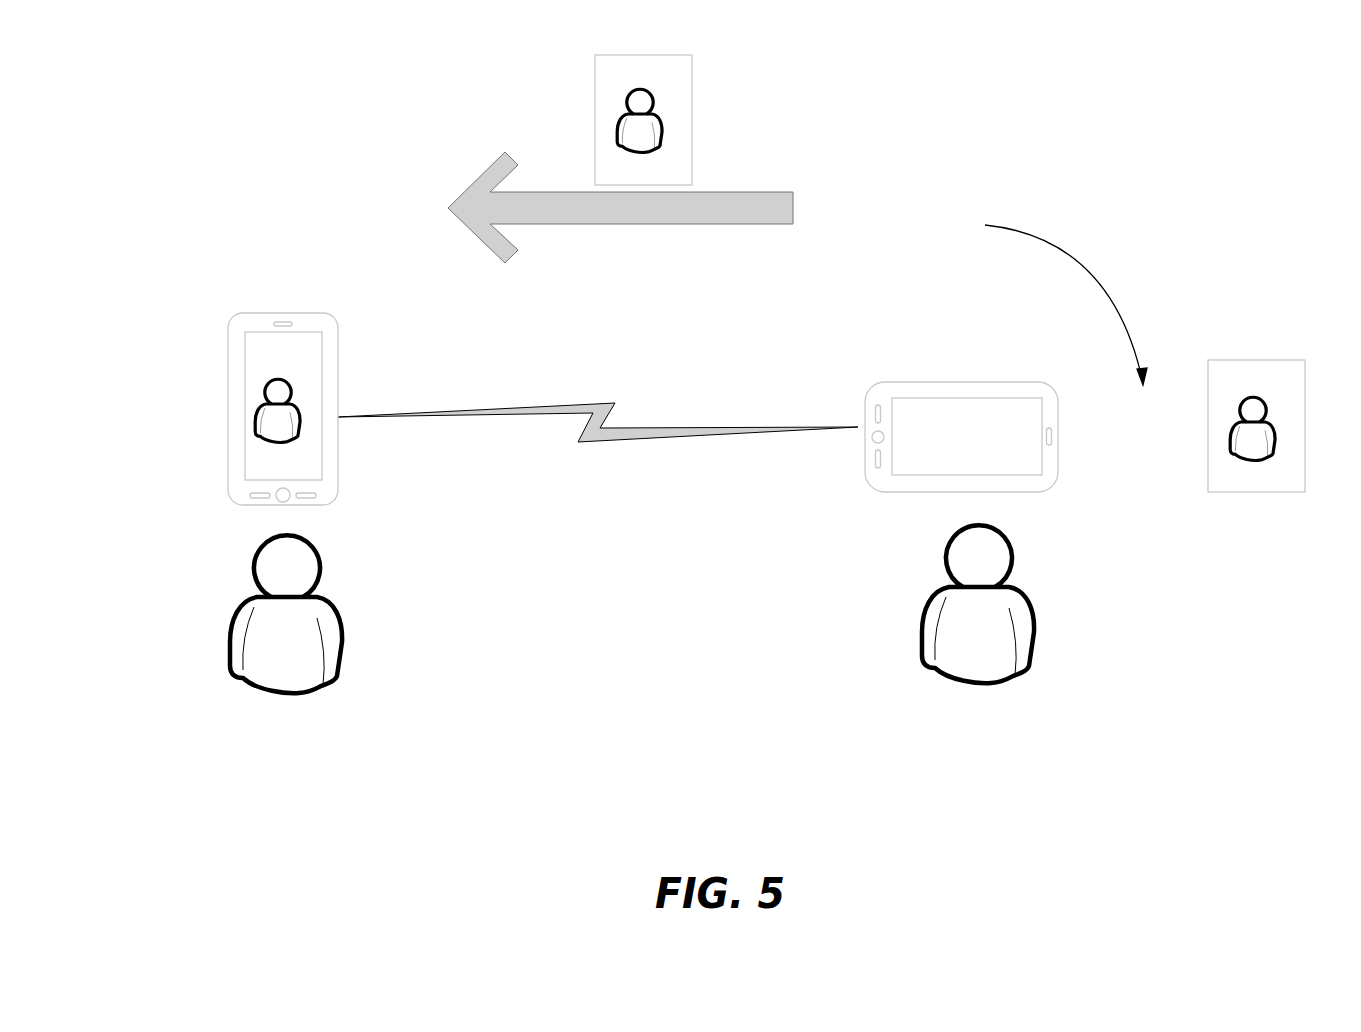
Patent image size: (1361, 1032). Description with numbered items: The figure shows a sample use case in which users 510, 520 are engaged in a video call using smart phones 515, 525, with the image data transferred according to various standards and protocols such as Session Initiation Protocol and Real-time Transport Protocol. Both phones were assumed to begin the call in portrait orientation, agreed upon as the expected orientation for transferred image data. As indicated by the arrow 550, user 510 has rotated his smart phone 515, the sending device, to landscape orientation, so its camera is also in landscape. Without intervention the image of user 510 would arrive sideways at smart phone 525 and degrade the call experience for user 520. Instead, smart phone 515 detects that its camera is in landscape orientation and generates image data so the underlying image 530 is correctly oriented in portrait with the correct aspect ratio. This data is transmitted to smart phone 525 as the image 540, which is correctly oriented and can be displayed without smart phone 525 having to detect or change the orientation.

The user 510 is at (1038, 700).
The smart phone 515 is at (862, 365).
The user 520 is at (357, 685).
The smart phone 525 is at (228, 313).
The image 530 is at (1290, 360).
The image 540 is at (695, 83).
The arrow 550 is at (1082, 237).